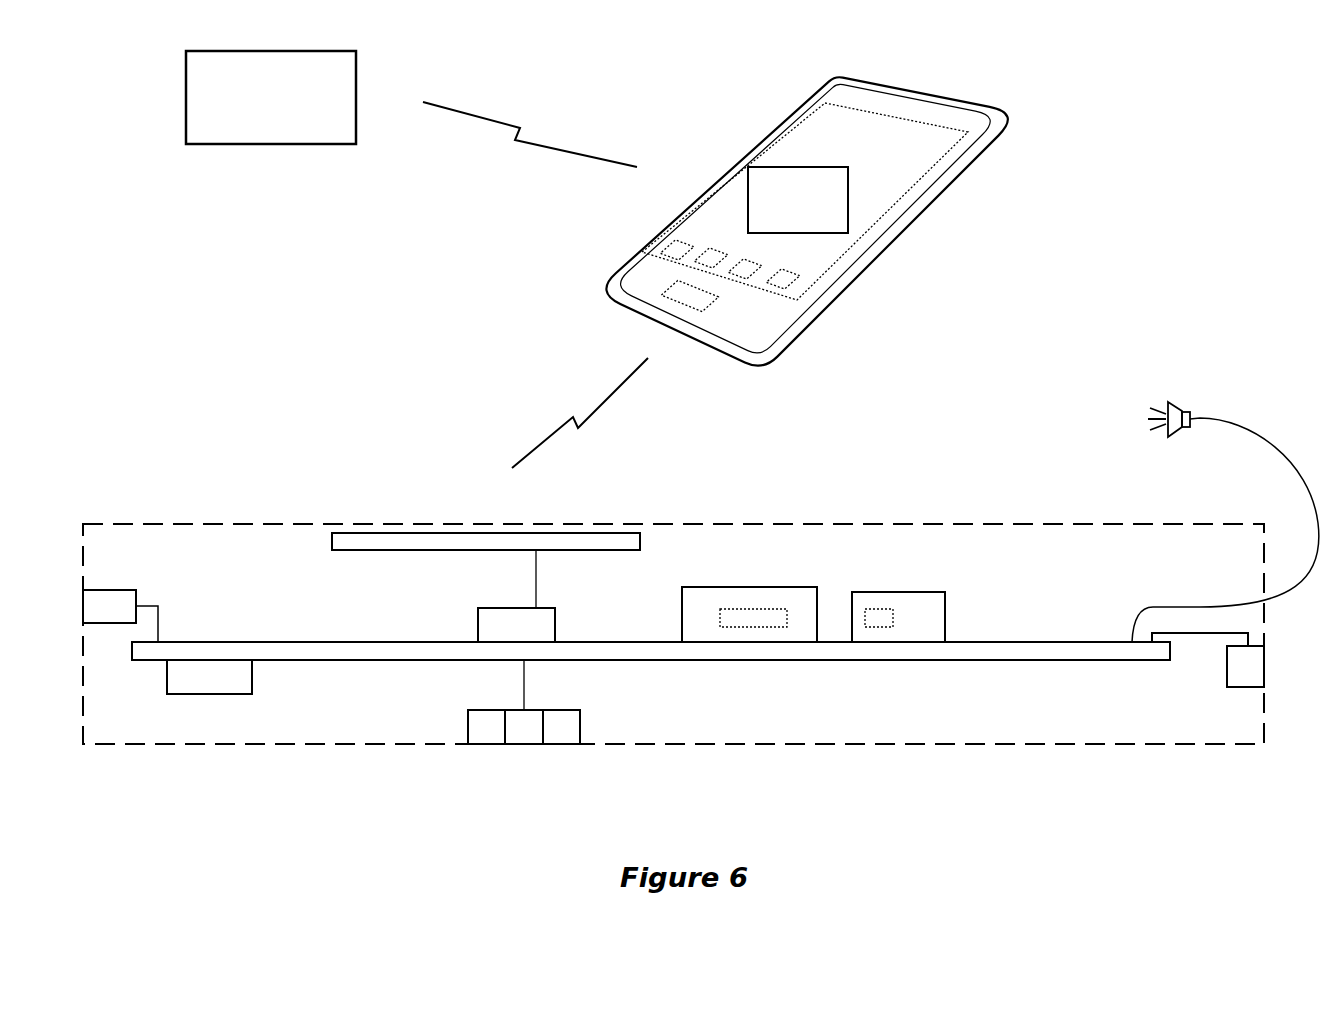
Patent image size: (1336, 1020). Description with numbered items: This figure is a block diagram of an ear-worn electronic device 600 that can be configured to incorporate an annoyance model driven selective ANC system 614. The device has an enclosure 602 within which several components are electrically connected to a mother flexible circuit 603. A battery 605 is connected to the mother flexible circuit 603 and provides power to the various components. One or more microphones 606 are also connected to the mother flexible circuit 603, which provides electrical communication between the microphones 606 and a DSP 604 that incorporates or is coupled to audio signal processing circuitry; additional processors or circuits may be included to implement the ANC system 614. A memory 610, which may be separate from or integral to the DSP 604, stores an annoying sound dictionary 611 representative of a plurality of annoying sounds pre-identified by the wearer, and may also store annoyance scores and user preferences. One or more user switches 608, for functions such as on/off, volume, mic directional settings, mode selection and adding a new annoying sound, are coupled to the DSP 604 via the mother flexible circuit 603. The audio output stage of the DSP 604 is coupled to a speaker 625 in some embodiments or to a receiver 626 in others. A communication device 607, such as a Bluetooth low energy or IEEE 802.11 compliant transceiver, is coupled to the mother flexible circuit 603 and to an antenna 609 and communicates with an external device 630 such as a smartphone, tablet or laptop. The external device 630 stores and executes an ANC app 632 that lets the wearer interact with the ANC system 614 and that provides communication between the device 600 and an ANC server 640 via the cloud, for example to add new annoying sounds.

The ear-worn electronic device 600 is at (240, 410).
The enclosure 602 is at (197, 523).
The mother flexible circuit 603 is at (867, 660).
The DSP 604 is at (772, 587).
The battery 605 is at (208, 695).
The microphones 606 is at (113, 590).
The communication device 607 is at (513, 608).
The user switches 608 is at (567, 710).
The antenna 609 is at (332, 538).
The memory 610 is at (935, 592).
The annoying sound dictionary 611 is at (877, 609).
The annoyance model driven selective ANC system 614 is at (750, 609).
The speaker 625 is at (1227, 664).
The receiver 626 is at (1175, 403).
The external device 630 is at (962, 175).
The ANC app 632 is at (777, 167).
The ANC server 640 is at (252, 144).